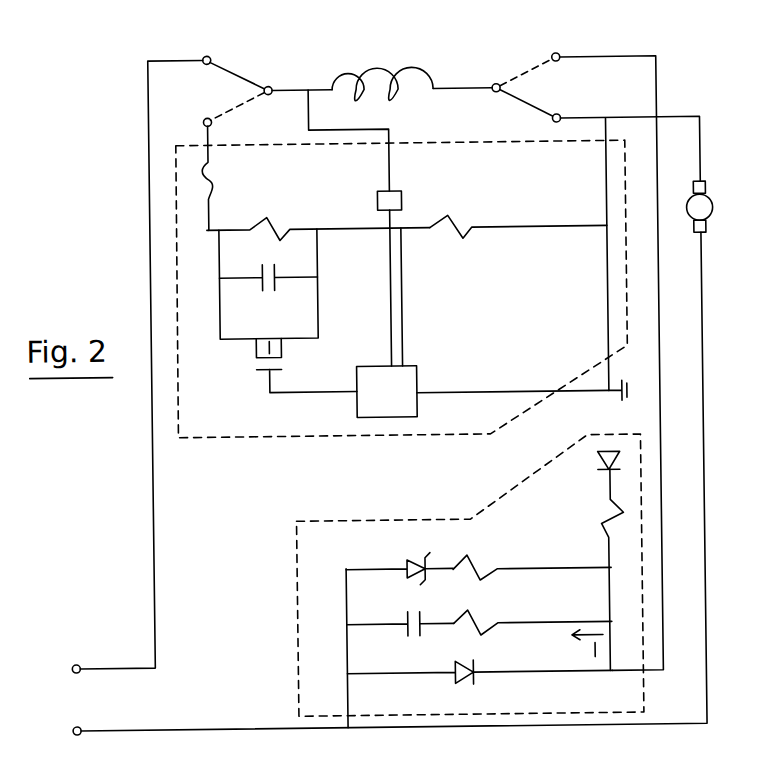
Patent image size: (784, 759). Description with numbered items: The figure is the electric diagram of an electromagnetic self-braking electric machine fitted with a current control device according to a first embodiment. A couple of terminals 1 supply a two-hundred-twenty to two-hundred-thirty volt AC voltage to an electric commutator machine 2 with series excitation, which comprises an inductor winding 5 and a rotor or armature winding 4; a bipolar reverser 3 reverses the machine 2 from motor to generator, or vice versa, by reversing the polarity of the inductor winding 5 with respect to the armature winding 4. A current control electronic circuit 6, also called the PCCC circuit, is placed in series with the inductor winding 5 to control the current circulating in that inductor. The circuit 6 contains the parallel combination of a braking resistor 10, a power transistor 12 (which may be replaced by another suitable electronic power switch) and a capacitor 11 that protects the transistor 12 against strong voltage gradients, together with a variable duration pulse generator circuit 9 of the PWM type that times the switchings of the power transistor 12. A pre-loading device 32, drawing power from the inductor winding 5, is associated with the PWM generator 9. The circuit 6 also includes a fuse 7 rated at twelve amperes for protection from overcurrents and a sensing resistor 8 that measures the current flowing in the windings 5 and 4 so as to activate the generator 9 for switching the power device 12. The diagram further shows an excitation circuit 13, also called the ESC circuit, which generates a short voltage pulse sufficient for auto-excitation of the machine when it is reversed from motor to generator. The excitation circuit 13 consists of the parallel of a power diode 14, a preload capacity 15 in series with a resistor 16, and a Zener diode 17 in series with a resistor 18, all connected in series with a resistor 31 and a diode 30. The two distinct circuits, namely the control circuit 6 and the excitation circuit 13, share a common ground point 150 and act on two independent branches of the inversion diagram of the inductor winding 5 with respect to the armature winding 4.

The terminals 1 is at (62, 640).
The electric commutator machine 2 is at (720, 196).
The bipolar reverser 3 is at (241, 70).
The rotor or armature winding 4 is at (714, 214).
The inductor winding 5 is at (377, 78).
The current control electronic circuit 6 is at (224, 438).
The fuse 7 is at (216, 175).
The sensing resistor 8 is at (466, 233).
The variable duration pulse generator circuit 9 is at (380, 413).
The braking resistor 10 is at (272, 220).
The capacitor 11 is at (277, 283).
The power transistor 12 is at (277, 369).
The excitation circuit 13 is at (294, 691).
The power diode 14 is at (475, 680).
The preload capacity 15 is at (422, 630).
The resistor 16 is at (487, 630).
The Zener diode 17 is at (411, 577).
The resistor 18 is at (486, 576).
The diode 30 is at (607, 473).
The resistor 31 is at (600, 526).
The pre-loading device 32 is at (402, 195).
The common ground point 150 is at (608, 390).